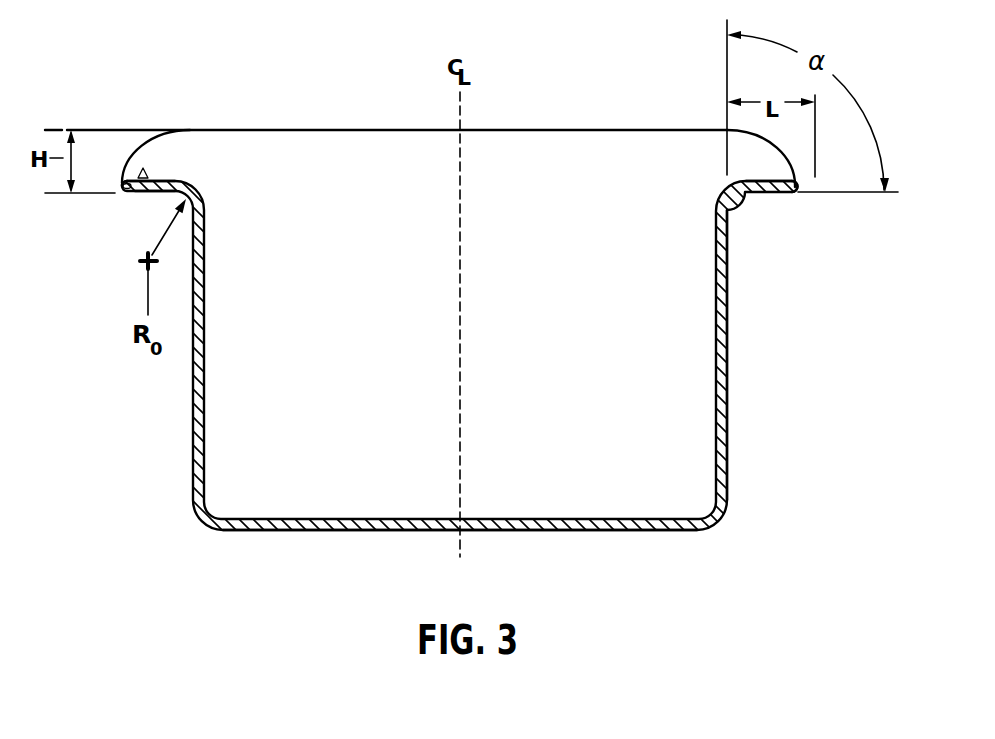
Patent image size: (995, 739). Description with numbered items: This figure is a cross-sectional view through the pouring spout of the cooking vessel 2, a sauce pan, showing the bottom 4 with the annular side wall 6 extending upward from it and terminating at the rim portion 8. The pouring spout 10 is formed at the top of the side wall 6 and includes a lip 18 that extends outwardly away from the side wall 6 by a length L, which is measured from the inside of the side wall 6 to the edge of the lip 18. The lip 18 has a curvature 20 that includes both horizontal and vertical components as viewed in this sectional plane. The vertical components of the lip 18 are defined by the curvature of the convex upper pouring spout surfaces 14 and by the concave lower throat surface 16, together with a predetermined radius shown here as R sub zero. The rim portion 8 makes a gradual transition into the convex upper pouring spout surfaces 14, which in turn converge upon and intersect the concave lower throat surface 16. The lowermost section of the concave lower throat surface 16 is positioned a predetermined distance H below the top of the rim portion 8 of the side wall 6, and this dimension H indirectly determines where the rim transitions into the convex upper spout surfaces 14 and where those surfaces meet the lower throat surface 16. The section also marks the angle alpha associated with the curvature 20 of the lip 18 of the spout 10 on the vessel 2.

The cooking vessel 2 is at (535, 100).
The bottom 4 is at (638, 532).
The annular side wall 6 is at (738, 440).
The rim portion 8 is at (317, 128).
The pouring spout 10 is at (150, 106).
The convex upper pouring spout surface 14 is at (197, 150).
The concave lower throat surface 16 is at (130, 190).
The lip 18 is at (153, 191).
The curvature 20 is at (139, 160).